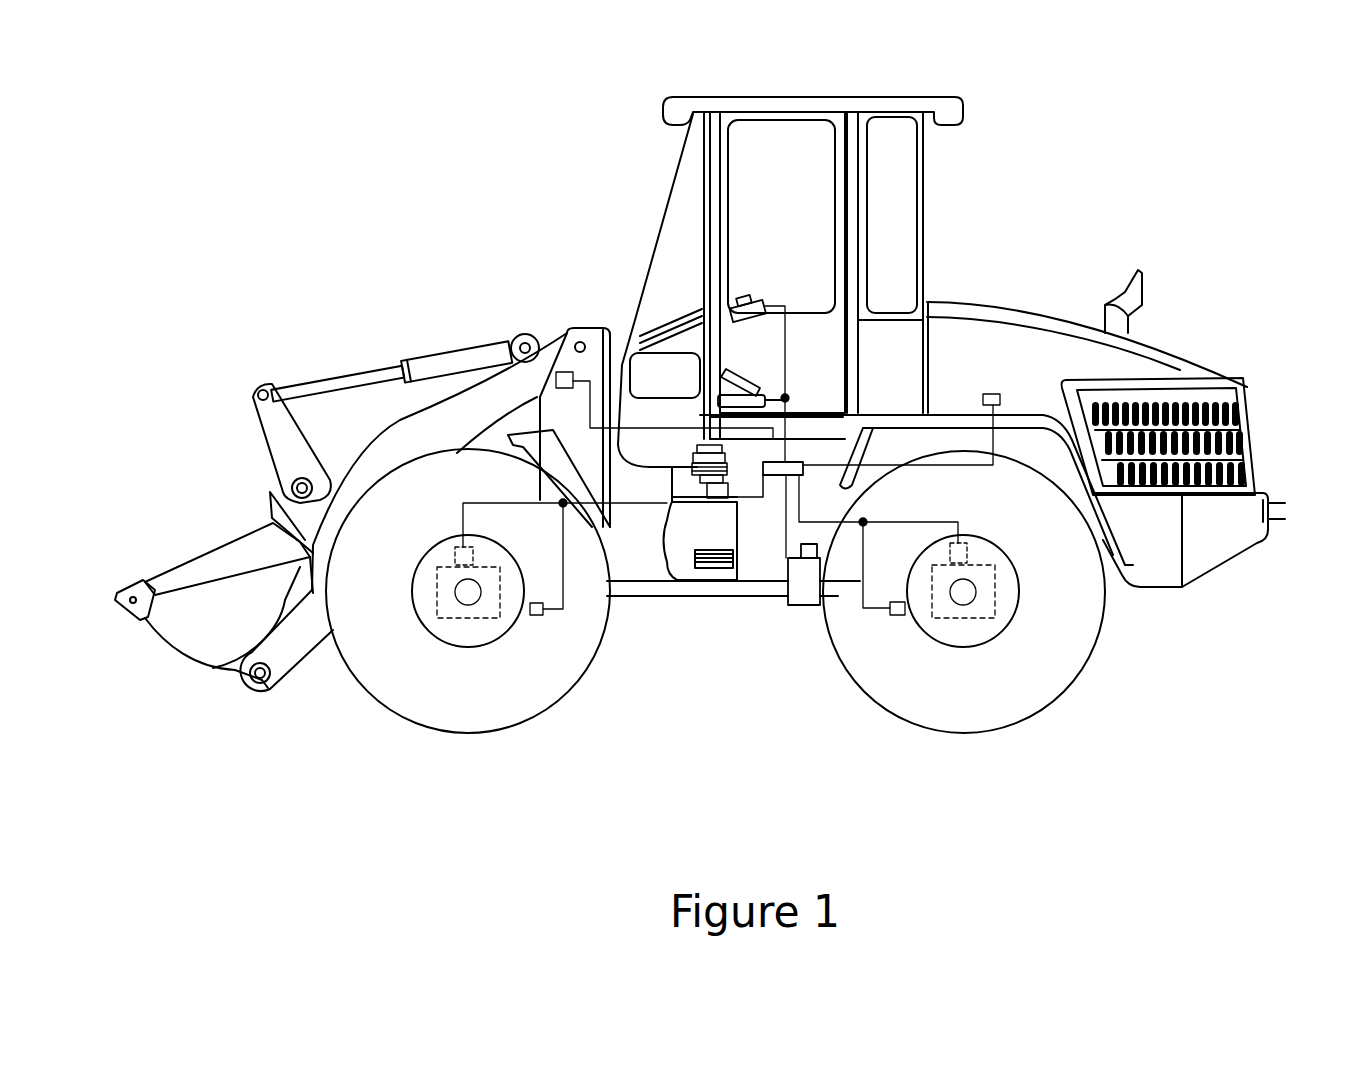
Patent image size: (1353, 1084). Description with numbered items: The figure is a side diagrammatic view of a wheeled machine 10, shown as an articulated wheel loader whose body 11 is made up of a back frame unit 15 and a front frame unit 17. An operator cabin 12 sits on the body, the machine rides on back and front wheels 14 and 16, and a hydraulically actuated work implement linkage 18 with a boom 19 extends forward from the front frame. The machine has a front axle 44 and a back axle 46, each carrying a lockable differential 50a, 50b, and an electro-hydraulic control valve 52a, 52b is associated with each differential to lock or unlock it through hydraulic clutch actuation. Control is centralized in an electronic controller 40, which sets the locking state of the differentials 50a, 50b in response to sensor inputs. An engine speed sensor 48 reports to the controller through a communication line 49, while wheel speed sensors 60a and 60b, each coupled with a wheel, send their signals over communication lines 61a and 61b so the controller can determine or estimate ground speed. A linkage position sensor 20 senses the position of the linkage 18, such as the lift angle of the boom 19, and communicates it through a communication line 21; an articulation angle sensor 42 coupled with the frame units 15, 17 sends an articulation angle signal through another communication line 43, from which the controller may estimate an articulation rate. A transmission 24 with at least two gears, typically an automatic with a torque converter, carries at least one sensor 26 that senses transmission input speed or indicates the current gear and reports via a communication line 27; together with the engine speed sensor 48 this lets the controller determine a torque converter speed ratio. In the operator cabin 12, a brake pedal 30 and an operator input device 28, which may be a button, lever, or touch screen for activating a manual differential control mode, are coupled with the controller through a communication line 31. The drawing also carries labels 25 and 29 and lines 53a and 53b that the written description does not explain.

The wheeled machine 10 is at (450, 305).
The body 11 is at (1153, 352).
The operator cabin 12 is at (920, 218).
The back wheel 14 is at (875, 687).
The back frame unit 15 is at (1150, 577).
The front wheel 16 is at (548, 688).
The front frame unit 17 is at (647, 565).
The hydraulically actuated work implement linkage 18 is at (313, 358).
The boom 19 is at (272, 440).
The linkage position sensor 20 is at (567, 333).
The communication line 21 is at (588, 385).
The transmission 24 is at (800, 603).
The articulation joint 25 is at (705, 587).
The sensor 26 is at (818, 600).
The communication line 27 is at (784, 503).
The operator input device 28 is at (732, 300).
The signal line 29 is at (788, 310).
The brake pedal 30 is at (745, 388).
The communication line 31 is at (790, 390).
The electronic controller 40 is at (812, 476).
The articulation angle sensor 42 is at (712, 492).
The communication line 43 is at (748, 493).
The front axle 44 is at (462, 592).
The back axle 46 is at (970, 588).
The engine speed sensor 48 is at (995, 393).
The communication line 49 is at (995, 432).
The lockable differential 50a is at (477, 612).
The lockable differential 50b is at (963, 610).
The electro-hydraulic control valve 52a is at (455, 560).
The electro-hydraulic control valve 52b is at (965, 558).
The signal line 53a is at (479, 469).
The signal line 53b is at (905, 522).
The wheel speed sensor 60a is at (535, 618).
The wheel speed sensor 60b is at (900, 617).
The communication line 61a is at (560, 567).
The communication line 61b is at (866, 580).